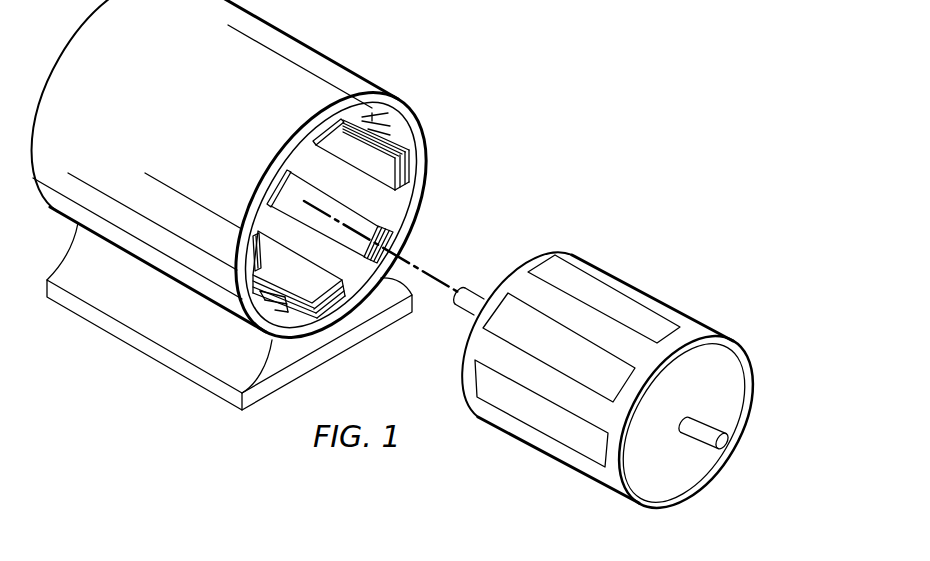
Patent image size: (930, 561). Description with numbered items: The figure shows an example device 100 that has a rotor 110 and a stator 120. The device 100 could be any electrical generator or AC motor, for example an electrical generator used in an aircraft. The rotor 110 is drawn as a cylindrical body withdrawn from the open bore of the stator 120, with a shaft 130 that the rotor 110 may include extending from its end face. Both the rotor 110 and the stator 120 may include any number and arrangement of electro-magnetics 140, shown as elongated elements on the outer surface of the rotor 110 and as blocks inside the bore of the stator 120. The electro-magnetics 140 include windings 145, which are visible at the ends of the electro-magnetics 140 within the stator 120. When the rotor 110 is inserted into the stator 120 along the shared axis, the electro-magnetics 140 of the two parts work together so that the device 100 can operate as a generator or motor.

The device 100 is at (558, 79).
The rotor 110 is at (703, 315).
The stator 120 is at (350, 271).
The shaft 130 is at (711, 422).
The electro-magnetics 140 is at (638, 250).
The windings 145 is at (383, 227).